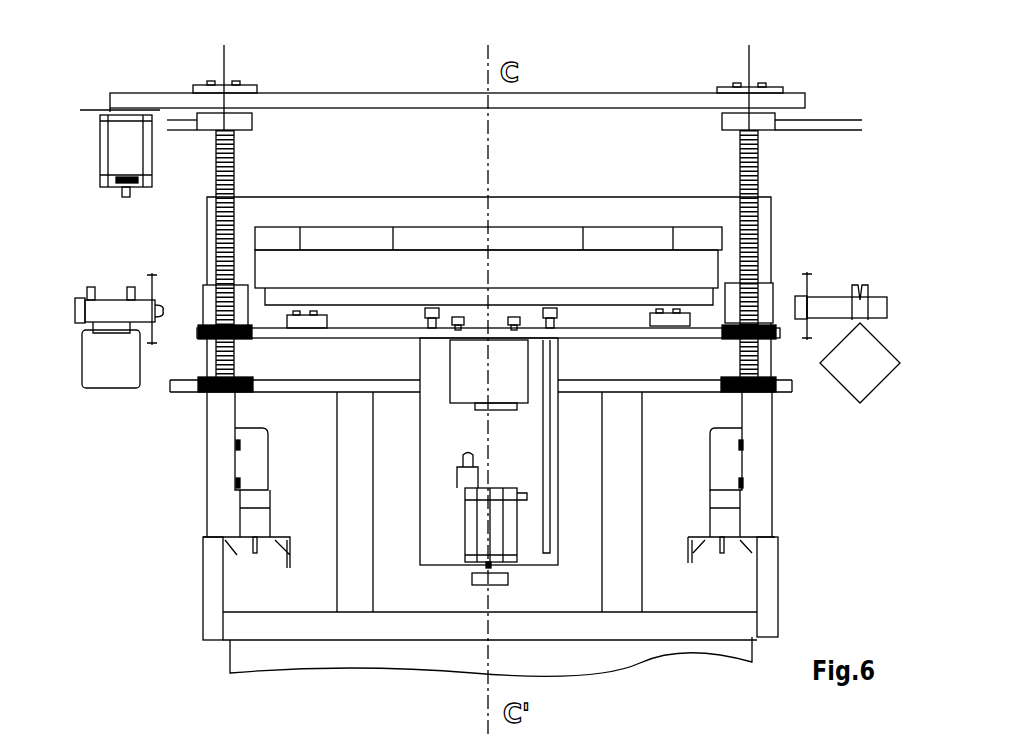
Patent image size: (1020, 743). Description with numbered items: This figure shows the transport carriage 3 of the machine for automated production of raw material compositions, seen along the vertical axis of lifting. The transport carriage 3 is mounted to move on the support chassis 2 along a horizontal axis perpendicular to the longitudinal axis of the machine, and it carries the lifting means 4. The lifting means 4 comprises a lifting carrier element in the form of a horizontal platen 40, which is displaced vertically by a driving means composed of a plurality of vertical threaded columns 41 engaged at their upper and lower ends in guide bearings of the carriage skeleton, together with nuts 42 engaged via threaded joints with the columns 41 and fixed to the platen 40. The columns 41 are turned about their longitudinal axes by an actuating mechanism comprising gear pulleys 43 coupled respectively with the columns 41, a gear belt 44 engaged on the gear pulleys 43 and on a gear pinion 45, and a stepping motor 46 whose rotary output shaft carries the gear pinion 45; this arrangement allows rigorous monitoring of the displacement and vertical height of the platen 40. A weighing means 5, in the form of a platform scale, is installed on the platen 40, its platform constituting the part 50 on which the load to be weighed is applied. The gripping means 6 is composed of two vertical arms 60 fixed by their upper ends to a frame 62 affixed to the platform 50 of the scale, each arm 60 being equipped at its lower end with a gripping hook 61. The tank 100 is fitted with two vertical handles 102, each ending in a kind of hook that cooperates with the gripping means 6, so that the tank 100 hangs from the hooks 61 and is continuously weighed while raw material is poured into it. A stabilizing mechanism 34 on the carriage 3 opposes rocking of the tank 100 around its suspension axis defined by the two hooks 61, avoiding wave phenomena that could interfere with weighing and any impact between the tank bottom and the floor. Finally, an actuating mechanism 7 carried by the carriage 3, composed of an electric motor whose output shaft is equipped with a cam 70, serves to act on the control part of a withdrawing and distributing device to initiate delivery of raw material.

The support chassis 2 is at (77, 378).
The transport carriage 3 is at (677, 383).
The lifting means 4 is at (160, 200).
The weighing means 5 is at (592, 300).
The gripping means 6 is at (205, 443).
The actuating mechanism 7 is at (490, 543).
The stabilizing mechanism 34 is at (363, 577).
The lifting carrier element 40 is at (373, 335).
The vertical threaded columns 41 is at (215, 167).
The nuts 42 is at (210, 290).
The gear pulleys 43 is at (258, 90).
The gear belt 44 is at (431, 102).
The gear pinion 45 is at (132, 93).
The stepping motor 46 is at (122, 167).
The platform 50 is at (593, 247).
The vertical arms 60 is at (232, 475).
The gripping hook 61 is at (270, 538).
The frame 62 is at (375, 238).
The cam 70 is at (477, 587).
The tank 100 is at (267, 663).
The vertical handles 102 is at (217, 598).